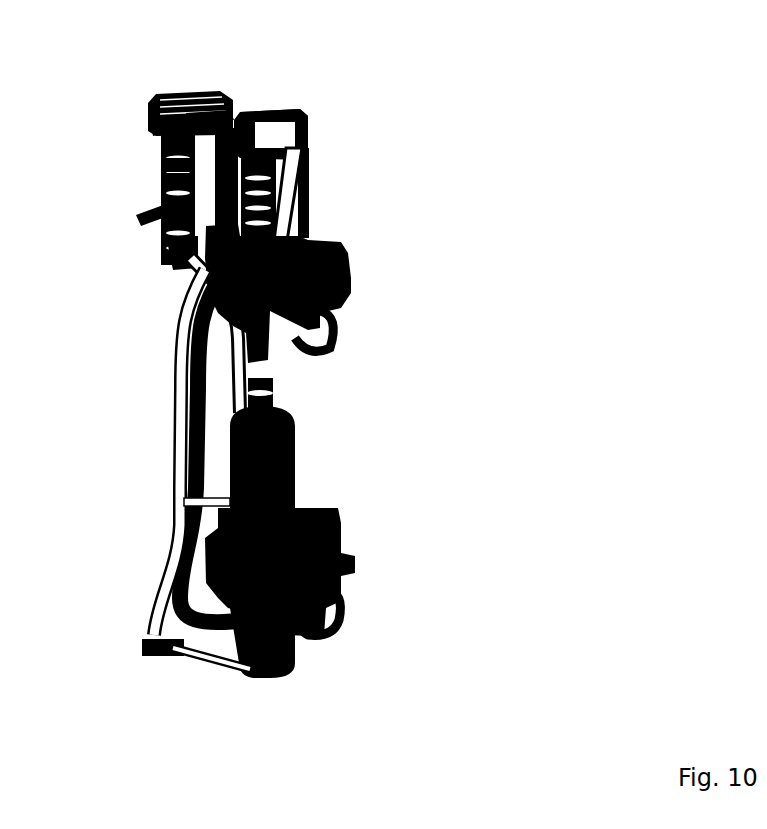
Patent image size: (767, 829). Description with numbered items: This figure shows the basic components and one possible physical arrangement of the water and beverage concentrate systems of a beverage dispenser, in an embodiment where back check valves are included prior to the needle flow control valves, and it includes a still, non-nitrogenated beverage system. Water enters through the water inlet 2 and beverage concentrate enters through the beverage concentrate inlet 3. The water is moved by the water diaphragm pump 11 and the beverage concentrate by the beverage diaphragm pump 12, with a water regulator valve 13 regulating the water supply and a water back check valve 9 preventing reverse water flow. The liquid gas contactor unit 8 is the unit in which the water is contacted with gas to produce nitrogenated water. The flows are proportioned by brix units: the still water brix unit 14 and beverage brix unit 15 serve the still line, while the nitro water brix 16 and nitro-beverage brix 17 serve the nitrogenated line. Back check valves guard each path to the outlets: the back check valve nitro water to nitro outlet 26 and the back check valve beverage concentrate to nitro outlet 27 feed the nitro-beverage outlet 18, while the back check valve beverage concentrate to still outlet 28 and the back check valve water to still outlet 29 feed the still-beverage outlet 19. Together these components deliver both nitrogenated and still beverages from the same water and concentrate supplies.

The water inlet 2 is at (162, 228).
The beverage concentrate inlet 3 is at (135, 204).
The liquid gas contactor unit 8 is at (289, 649).
The water back check valve 9 is at (153, 648).
The water diaphragm pump 11 is at (340, 578).
The beverage diaphragm pump 12 is at (332, 302).
The water regulator valve 13 is at (268, 392).
The still water brix unit 14 is at (186, 85).
The beverage brix unit 15 is at (204, 84).
The nitro water brix 16 is at (268, 103).
The nitro-beverage brix 17 is at (286, 107).
The nitro-beverage outlet 18 is at (153, 130).
The still-beverage outlet 19 is at (143, 123).
The back check valve nitro water to nitro outlet 26 is at (294, 207).
The back check valve beverage concentrate to nitro outlet 27 is at (268, 177).
The back check valve beverage concentrate to still outlet 28 is at (157, 170).
The back check valve water to still outlet 29 is at (153, 157).